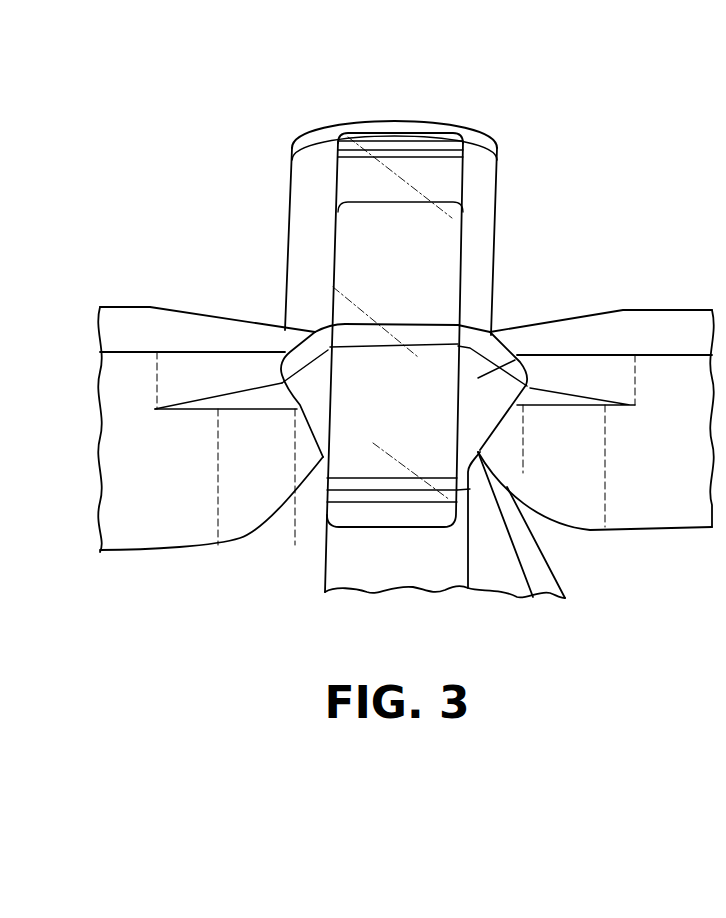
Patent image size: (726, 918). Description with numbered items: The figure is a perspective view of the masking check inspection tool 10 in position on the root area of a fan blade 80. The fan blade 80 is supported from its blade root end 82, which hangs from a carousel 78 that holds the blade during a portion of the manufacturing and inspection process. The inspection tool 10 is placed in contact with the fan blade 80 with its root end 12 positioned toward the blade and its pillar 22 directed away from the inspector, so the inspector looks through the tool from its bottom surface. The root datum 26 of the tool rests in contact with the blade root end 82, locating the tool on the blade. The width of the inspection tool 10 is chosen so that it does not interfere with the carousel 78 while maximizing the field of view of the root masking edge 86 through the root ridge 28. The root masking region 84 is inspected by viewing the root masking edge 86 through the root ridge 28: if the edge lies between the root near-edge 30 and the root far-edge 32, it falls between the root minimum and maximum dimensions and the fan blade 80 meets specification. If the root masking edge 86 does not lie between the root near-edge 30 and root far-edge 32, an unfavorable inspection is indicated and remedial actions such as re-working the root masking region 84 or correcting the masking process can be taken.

The inspection tool 10 is at (382, 131).
The root end 12 is at (386, 541).
The pillar 22 is at (360, 250).
The root datum 26 is at (355, 320).
The root ridge 28 is at (325, 500).
The root near-edge 30 is at (367, 477).
The root far-edge 32 is at (387, 503).
The carousel 78 is at (165, 332).
The fan blade 80 is at (457, 590).
The blade root end 82 is at (467, 325).
The root masking region 84 is at (513, 360).
The root masking edge 86 is at (457, 492).